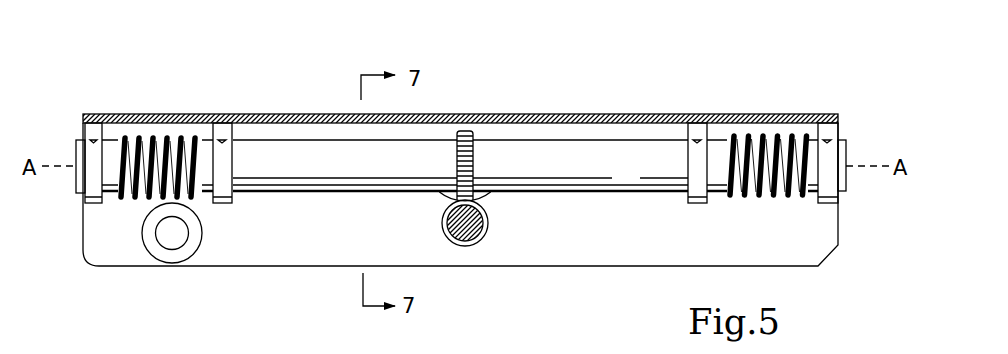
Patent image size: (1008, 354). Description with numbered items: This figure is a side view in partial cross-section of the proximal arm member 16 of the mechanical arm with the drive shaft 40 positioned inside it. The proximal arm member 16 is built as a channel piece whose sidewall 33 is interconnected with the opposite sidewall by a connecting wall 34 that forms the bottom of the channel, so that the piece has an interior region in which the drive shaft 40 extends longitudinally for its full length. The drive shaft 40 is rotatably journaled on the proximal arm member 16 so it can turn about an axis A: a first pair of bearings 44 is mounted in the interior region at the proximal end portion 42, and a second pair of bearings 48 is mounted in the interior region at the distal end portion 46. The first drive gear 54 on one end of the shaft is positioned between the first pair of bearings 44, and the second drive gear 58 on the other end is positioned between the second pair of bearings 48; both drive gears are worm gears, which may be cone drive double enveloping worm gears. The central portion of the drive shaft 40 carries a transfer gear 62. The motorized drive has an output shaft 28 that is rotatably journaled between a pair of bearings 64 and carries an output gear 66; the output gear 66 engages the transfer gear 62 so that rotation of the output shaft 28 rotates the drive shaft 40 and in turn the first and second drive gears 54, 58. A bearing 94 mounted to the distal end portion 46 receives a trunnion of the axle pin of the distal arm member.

The proximal arm member 16 is at (615, 62).
The output shaft 28 is at (470, 220).
The sidewall 33 is at (575, 250).
The connecting wall 34 is at (670, 115).
The drive shaft 40 is at (350, 198).
The proximal end portion 42 is at (792, 99).
The first pair of bearings 44 is at (697, 203).
The distal end portion 46 is at (166, 99).
The second pair of bearings 48 is at (96, 205).
The first drive gear 54 is at (770, 198).
The second drive gear 58 is at (183, 137).
The transfer gear 62 is at (464, 131).
The pair of bearings 64 is at (480, 248).
The output gear 66 is at (447, 232).
The bearing 94 is at (173, 253).